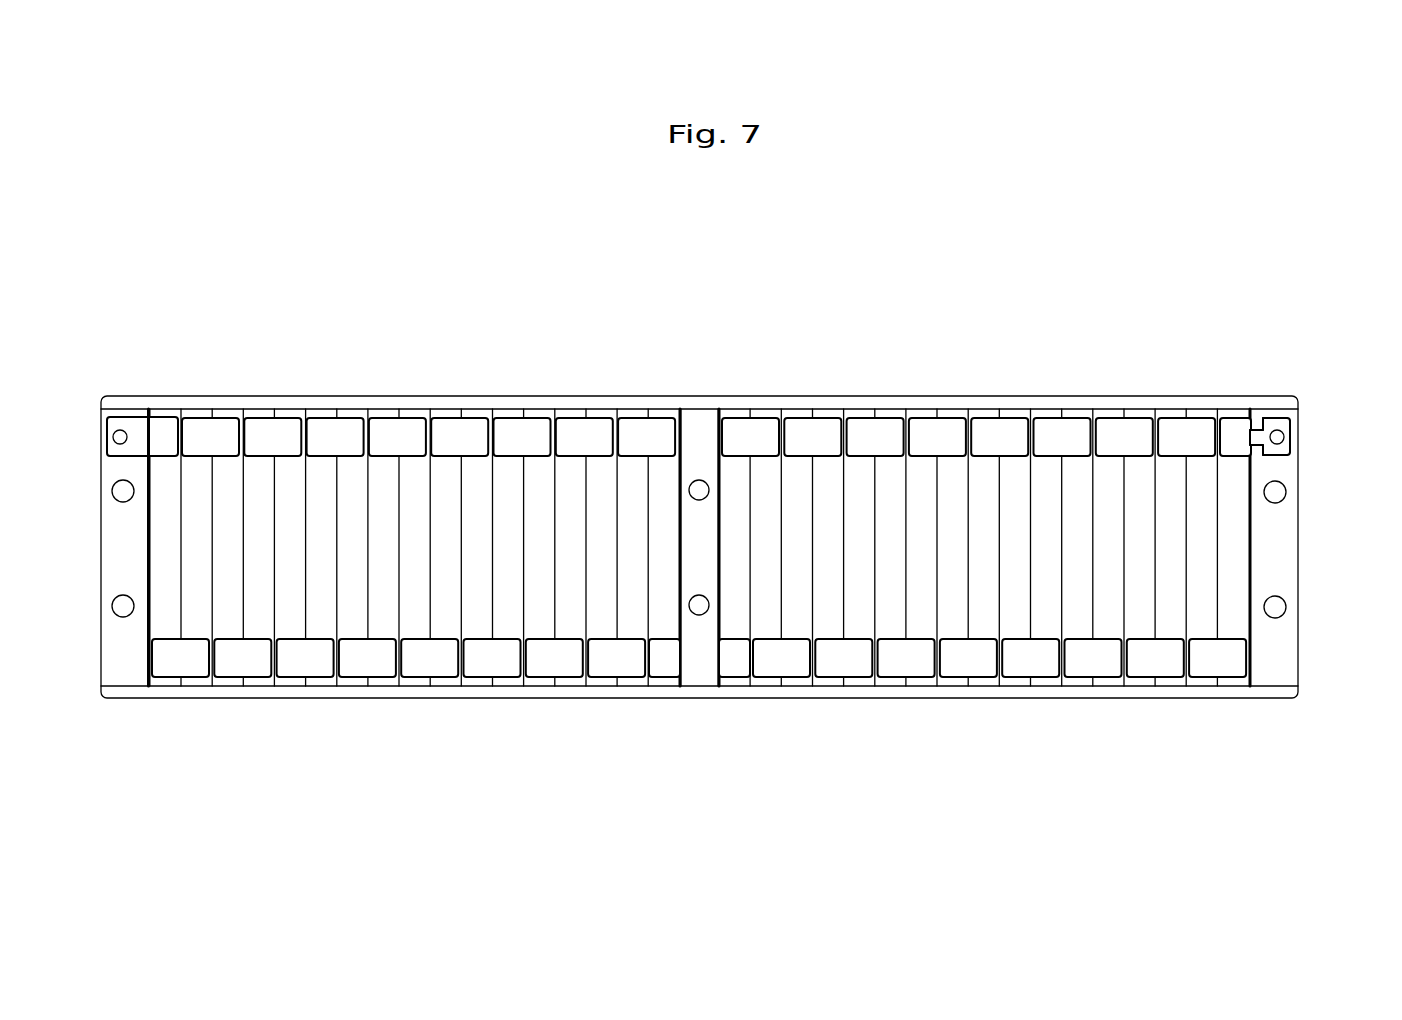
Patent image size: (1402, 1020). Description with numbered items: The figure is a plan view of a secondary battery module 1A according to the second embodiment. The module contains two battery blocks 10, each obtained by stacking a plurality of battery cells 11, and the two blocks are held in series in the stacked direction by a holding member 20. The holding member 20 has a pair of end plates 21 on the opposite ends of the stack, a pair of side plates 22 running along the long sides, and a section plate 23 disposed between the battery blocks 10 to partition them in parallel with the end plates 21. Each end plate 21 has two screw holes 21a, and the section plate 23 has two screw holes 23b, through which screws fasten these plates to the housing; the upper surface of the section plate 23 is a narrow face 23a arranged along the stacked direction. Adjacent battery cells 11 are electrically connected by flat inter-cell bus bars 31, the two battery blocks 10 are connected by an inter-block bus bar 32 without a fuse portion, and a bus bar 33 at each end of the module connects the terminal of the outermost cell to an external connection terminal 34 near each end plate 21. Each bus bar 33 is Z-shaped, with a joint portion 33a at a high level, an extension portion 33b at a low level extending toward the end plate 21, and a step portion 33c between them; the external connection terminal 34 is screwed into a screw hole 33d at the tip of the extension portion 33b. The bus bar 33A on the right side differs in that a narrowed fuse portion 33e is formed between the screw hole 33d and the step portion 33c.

The secondary battery module 1A is at (1248, 287).
The battery block 10 is at (348, 486).
The battery cell 11 is at (162, 618).
The holding member 20 is at (923, 388).
The end plate 21 is at (120, 557).
The screw hole 21a is at (113, 492).
The side plate 22 is at (553, 395).
The section plate 23 is at (703, 572).
The narrow face 23a is at (702, 537).
The screw hole 23b is at (699, 480).
The inter-cell bus bar 31 is at (193, 665).
The inter-block bus bar 32 is at (665, 665).
The bus bar at an end of the module 33 is at (163, 430).
The bus bar at an end of the module 33A is at (1304, 417).
The joint portion 33a is at (1235, 430).
The extension portion 33b is at (1280, 425).
The step portion 33c is at (1257, 429).
The screw hole 33d is at (1286, 434).
The fuse portion 33e is at (1256, 451).
The external connection terminal 34 is at (112, 437).